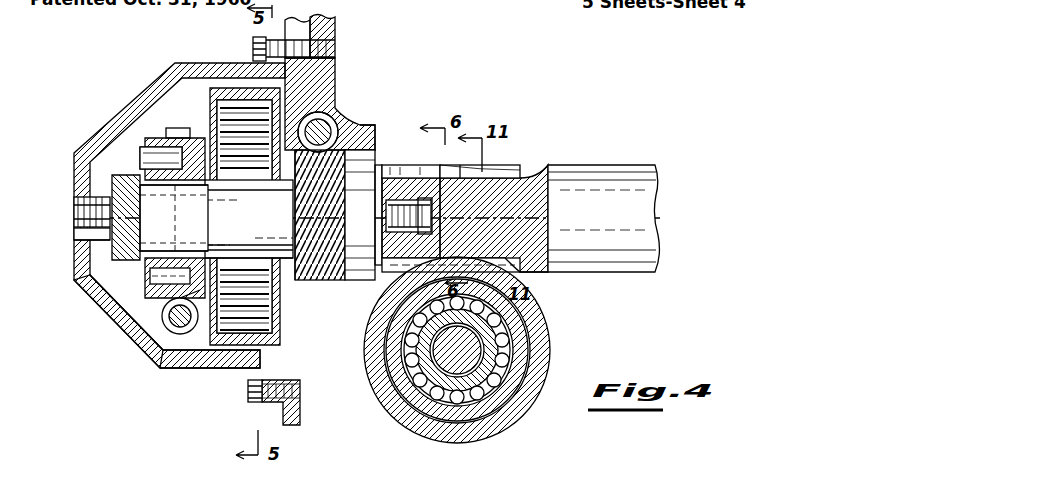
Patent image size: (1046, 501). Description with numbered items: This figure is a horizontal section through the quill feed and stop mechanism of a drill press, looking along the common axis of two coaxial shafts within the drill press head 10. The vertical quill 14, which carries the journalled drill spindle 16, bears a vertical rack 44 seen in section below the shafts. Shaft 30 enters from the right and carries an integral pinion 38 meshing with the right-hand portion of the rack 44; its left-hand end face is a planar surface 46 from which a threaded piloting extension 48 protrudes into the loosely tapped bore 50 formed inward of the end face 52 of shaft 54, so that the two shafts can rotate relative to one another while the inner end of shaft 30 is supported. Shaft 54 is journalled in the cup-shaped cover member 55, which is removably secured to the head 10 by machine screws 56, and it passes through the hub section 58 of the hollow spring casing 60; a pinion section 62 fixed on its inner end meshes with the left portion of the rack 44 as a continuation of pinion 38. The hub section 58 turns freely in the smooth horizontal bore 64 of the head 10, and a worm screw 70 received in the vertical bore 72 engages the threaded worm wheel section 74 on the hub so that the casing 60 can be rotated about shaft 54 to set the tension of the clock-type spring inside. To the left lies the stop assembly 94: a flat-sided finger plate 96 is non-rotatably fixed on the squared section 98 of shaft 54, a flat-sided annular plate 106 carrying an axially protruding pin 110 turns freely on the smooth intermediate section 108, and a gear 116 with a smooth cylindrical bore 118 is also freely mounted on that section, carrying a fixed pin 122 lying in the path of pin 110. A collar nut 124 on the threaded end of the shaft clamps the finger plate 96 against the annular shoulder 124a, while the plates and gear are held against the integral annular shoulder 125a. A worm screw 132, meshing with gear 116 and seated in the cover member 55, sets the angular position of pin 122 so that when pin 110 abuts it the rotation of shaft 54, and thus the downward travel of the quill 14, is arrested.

The drill press head 10 is at (336, 24).
The quill 14 is at (412, 430).
The drill spindle 16 is at (468, 344).
The shaft 30 is at (596, 265).
The pinion 38 is at (498, 172).
The vertical rack 44 is at (525, 274).
The planar surface 46 is at (448, 264).
The piloting extension 48 is at (494, 218).
The tapped bore 50 is at (411, 218).
The end face 52 is at (462, 172).
The shaft 54 is at (245, 216).
The cover member 55 is at (172, 80).
The machine screws 56 is at (258, 44).
The hub section 58 is at (356, 280).
The spring casing 60 is at (306, 80).
The pinion section 62 is at (418, 170).
The horizontal bore 64 is at (376, 136).
The worm screw 70 is at (338, 124).
The vertical bore 72 is at (328, 108).
The worm wheel section 74 is at (314, 293).
The stop assembly 94 is at (118, 272).
The finger plate 96 is at (142, 268).
The squared section 98 is at (84, 213).
The annular plate 106 is at (190, 298).
The intermediate section 108 is at (227, 218).
The pin 110 is at (160, 150).
The gear 116 is at (180, 130).
The cylindrical bore 118 is at (174, 218).
The pin 122 is at (165, 300).
The collar nut 124 is at (128, 178).
The annular shoulder 124a is at (74, 240).
The annular shoulder 125a is at (212, 242).
The worm screw 132 is at (150, 350).